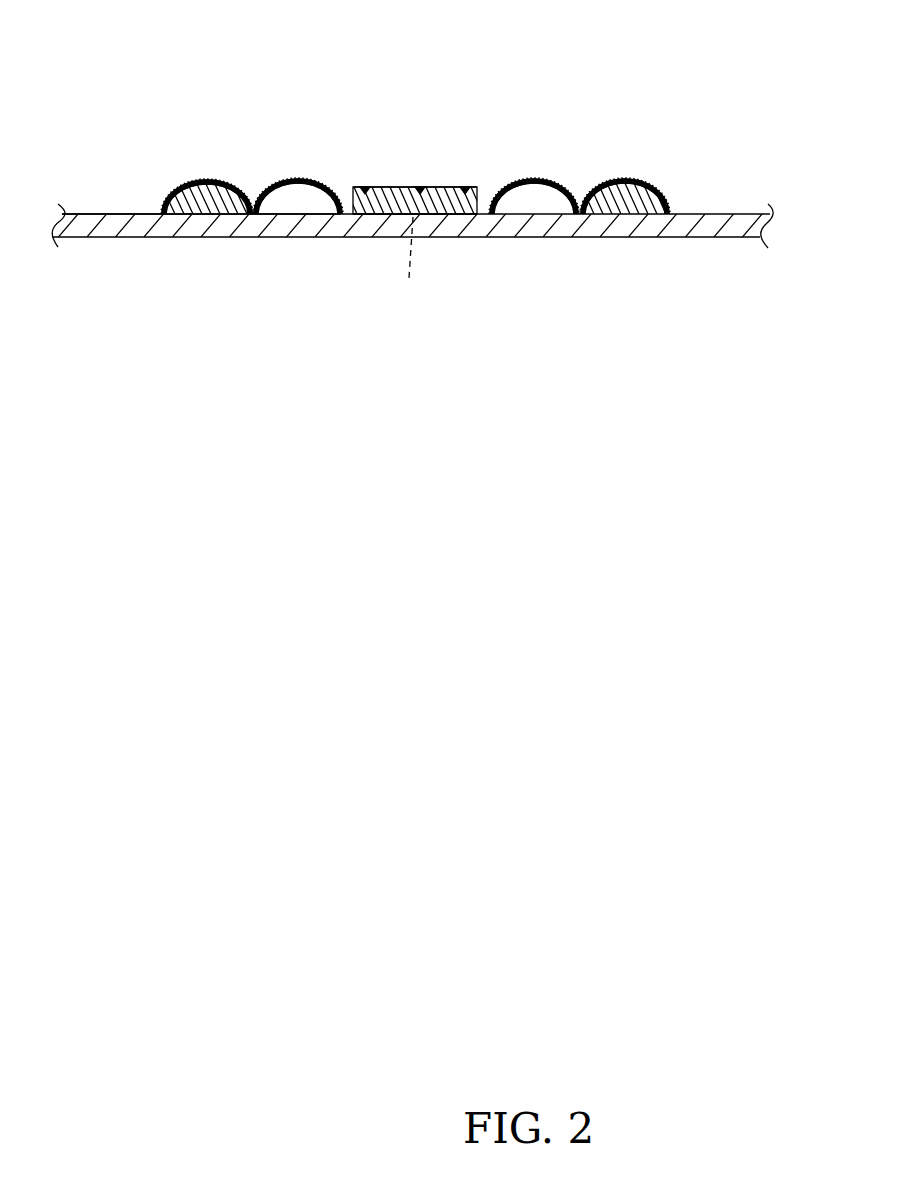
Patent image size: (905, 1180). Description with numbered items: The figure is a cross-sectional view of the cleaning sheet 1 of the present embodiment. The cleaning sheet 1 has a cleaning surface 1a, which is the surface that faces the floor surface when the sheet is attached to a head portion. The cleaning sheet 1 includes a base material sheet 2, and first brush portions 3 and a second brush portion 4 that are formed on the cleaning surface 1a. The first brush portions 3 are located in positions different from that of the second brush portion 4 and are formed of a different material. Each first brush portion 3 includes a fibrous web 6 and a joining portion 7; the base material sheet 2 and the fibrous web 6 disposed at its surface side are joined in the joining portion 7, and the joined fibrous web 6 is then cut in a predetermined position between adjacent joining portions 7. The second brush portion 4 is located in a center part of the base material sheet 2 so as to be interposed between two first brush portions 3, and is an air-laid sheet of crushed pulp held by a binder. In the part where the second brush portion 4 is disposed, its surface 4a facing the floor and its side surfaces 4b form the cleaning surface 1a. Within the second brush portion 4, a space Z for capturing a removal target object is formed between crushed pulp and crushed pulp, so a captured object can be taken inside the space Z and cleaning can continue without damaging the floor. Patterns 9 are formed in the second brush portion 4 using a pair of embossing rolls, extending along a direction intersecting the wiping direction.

The cleaning sheet 1 is at (760, 177).
The cleaning surface 1a is at (118, 214).
The base material sheet 2 is at (687, 220).
The first brush portion 3 is at (203, 200).
The second brush portion 4 is at (397, 187).
The surface of the second brush portion 4a is at (378, 185).
The side surfaces of the second brush portion 4b is at (345, 214).
The fibrous web 6 is at (239, 190).
The joining portion 7 is at (170, 207).
The pattern 9 is at (364, 186).
The space Z is at (407, 267).